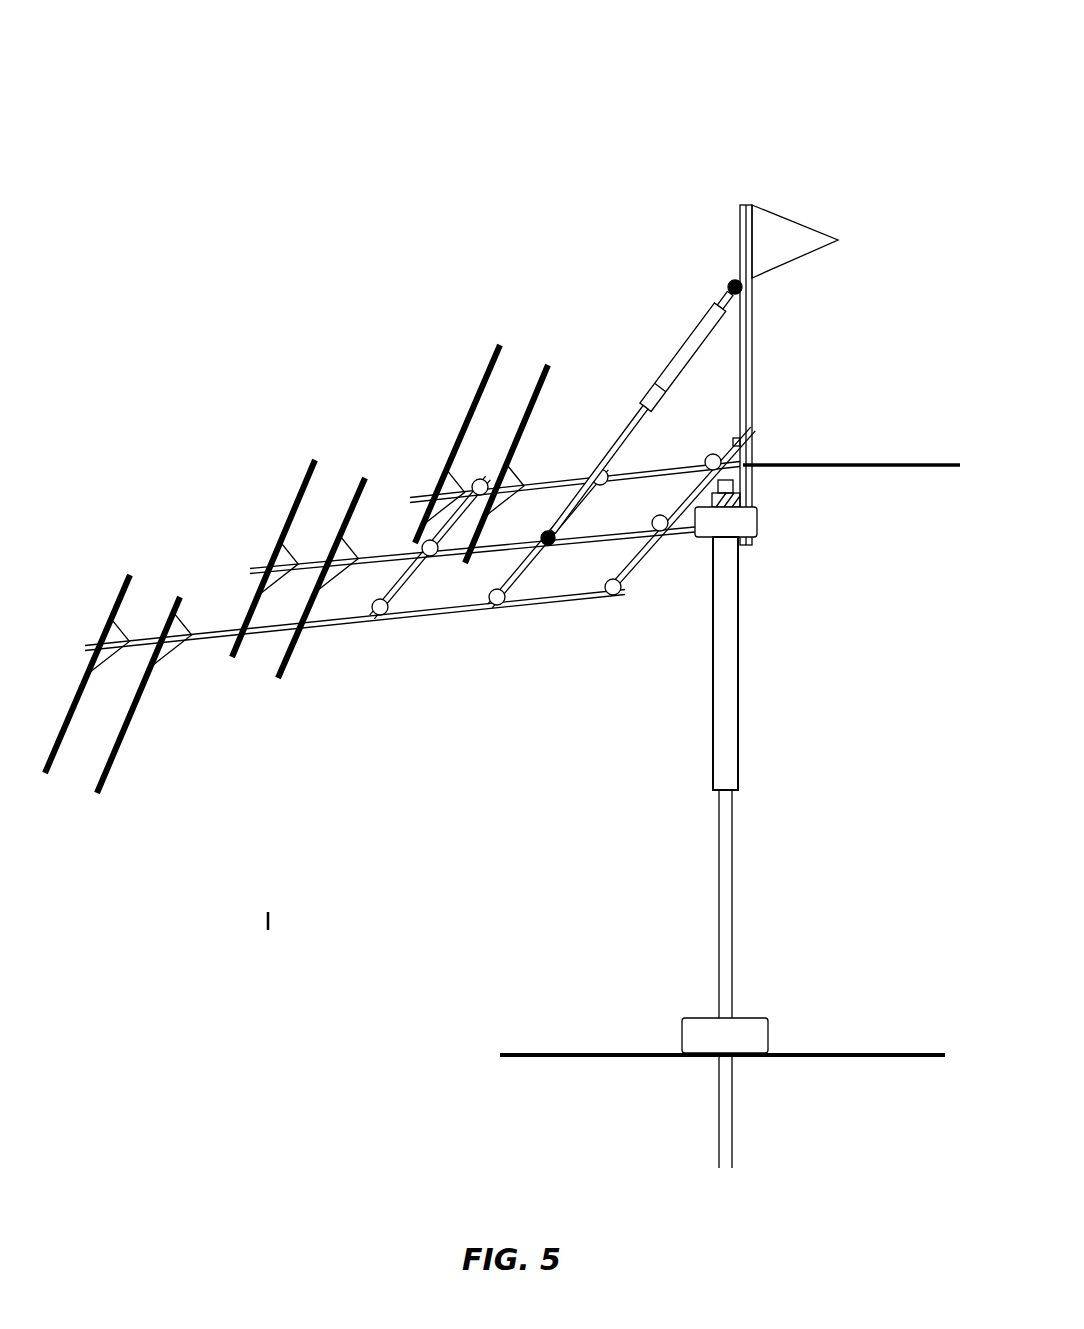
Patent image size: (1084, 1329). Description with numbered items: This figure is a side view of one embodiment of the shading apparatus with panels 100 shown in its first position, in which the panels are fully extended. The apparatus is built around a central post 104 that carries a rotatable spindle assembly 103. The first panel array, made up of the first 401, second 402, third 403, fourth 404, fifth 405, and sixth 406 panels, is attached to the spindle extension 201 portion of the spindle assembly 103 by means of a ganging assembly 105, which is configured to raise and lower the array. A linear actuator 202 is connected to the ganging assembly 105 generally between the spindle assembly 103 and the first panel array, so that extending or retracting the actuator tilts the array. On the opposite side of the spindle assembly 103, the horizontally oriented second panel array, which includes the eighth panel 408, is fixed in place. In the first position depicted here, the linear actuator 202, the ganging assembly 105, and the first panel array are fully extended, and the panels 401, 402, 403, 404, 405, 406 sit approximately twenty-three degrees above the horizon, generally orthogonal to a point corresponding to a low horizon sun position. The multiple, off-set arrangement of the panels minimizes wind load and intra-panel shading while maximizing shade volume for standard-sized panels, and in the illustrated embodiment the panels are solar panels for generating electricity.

The shading apparatus with panels 100 is at (232, 58).
The spindle assembly 103 is at (738, 665).
The central post 104 is at (733, 932).
The ganging assembly 105 is at (524, 602).
The spindle extension 201 is at (763, 355).
The linear actuator 202 is at (682, 337).
The first panel 401 is at (500, 343).
The second panel 402 is at (522, 433).
The third panel 403 is at (308, 468).
The fourth panel 404 is at (367, 482).
The fifth panel 405 is at (113, 582).
The sixth panel 406 is at (175, 607).
The eighth panel 408 is at (843, 478).